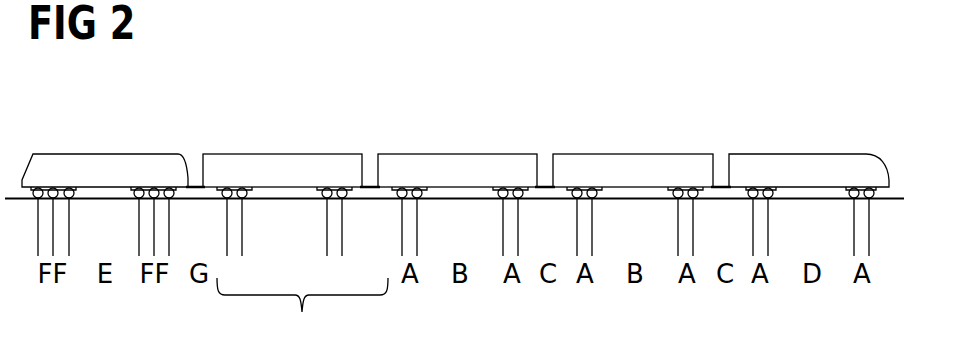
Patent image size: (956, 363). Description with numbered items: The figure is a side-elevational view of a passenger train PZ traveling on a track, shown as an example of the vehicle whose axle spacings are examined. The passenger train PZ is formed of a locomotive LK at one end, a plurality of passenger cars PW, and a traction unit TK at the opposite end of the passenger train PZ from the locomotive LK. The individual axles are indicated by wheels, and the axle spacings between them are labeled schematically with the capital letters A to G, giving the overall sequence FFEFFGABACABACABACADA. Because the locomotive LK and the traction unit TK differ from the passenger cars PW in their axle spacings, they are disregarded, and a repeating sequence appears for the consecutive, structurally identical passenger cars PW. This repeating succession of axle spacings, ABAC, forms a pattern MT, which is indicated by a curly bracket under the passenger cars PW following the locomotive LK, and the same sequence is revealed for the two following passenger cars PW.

The locomotive LK is at (102, 153).
The passenger cars PW is at (289, 154).
The traction unit TK is at (803, 154).
The passenger train PZ is at (547, 103).
The pattern MT is at (302, 301).